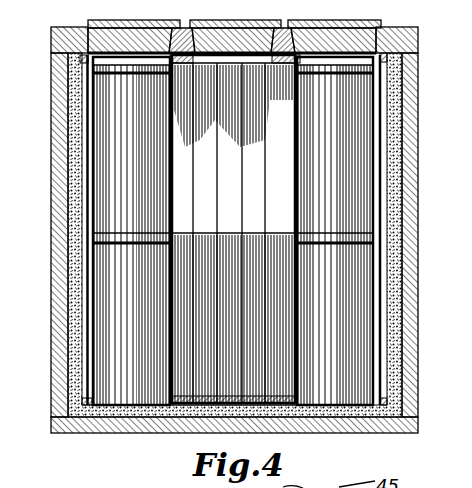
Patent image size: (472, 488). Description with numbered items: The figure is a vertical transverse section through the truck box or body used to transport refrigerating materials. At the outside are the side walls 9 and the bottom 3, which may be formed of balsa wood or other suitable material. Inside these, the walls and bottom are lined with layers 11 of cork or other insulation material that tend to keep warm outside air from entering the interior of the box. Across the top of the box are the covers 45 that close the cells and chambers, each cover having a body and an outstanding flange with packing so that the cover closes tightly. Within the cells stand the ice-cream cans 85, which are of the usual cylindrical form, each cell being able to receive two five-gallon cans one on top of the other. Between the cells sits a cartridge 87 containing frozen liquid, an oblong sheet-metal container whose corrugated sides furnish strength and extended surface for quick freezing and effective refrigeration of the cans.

The bottom 3 is at (250, 433).
The side walls 9 is at (50, 175).
The layers of cork insulation 11 is at (71, 142).
The covers 45 is at (127, 27).
The ice-cream cans 85 is at (95, 101).
The cartridge 87 is at (226, 142).